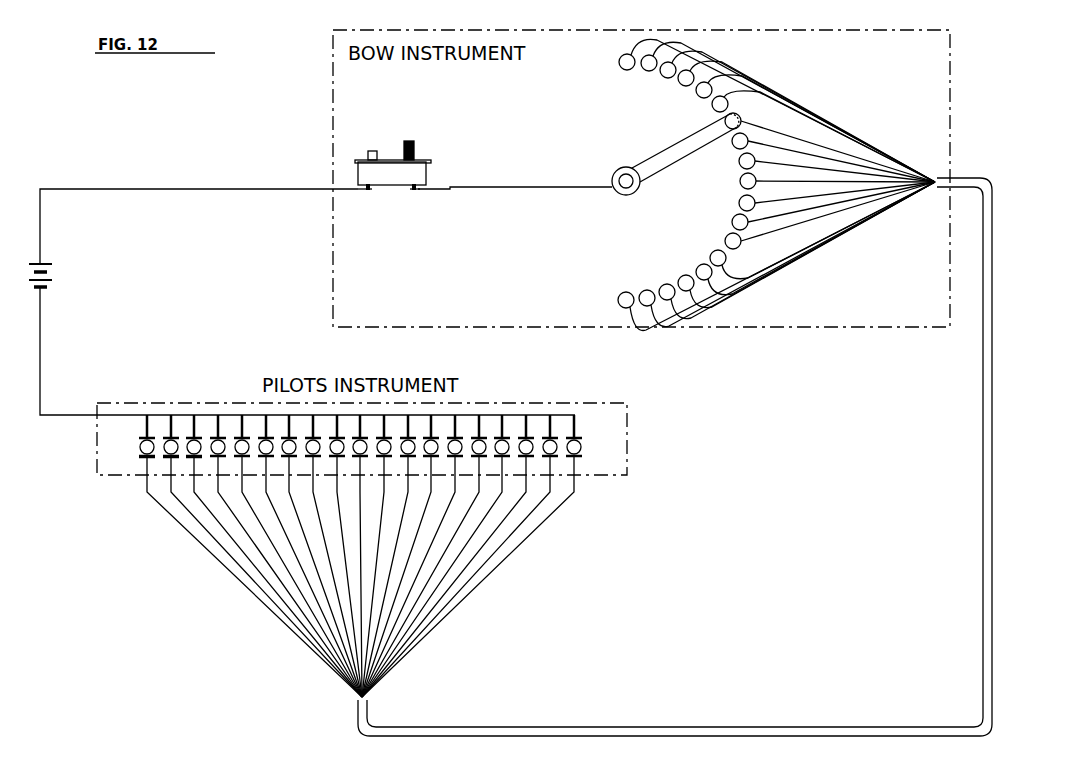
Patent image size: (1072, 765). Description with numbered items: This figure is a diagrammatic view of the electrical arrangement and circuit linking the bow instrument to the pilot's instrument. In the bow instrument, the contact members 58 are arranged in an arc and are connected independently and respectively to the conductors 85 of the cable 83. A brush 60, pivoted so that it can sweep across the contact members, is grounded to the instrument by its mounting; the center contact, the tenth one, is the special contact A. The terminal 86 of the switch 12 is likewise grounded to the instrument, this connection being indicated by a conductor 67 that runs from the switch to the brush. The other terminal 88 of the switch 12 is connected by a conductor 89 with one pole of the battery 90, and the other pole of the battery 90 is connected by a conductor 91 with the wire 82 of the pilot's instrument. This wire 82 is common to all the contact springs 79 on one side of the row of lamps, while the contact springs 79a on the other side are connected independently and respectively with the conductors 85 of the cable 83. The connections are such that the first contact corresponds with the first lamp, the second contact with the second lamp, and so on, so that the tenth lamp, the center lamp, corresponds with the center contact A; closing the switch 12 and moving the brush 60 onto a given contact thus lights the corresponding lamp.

The switch 12 is at (413, 172).
The contact members 58 is at (738, 205).
The brush 60 is at (675, 154).
The special contact A is at (740, 181).
The wire 67 is at (543, 184).
The contact springs 79 is at (556, 438).
The contact springs 79a is at (143, 458).
The wire 82 is at (565, 414).
The cable 83 is at (998, 418).
The conductors 85 is at (822, 240).
The terminal 86 is at (417, 190).
The terminal 88 is at (366, 192).
The conductor 89 is at (214, 188).
The battery 90 is at (53, 274).
The conductor 91 is at (42, 385).